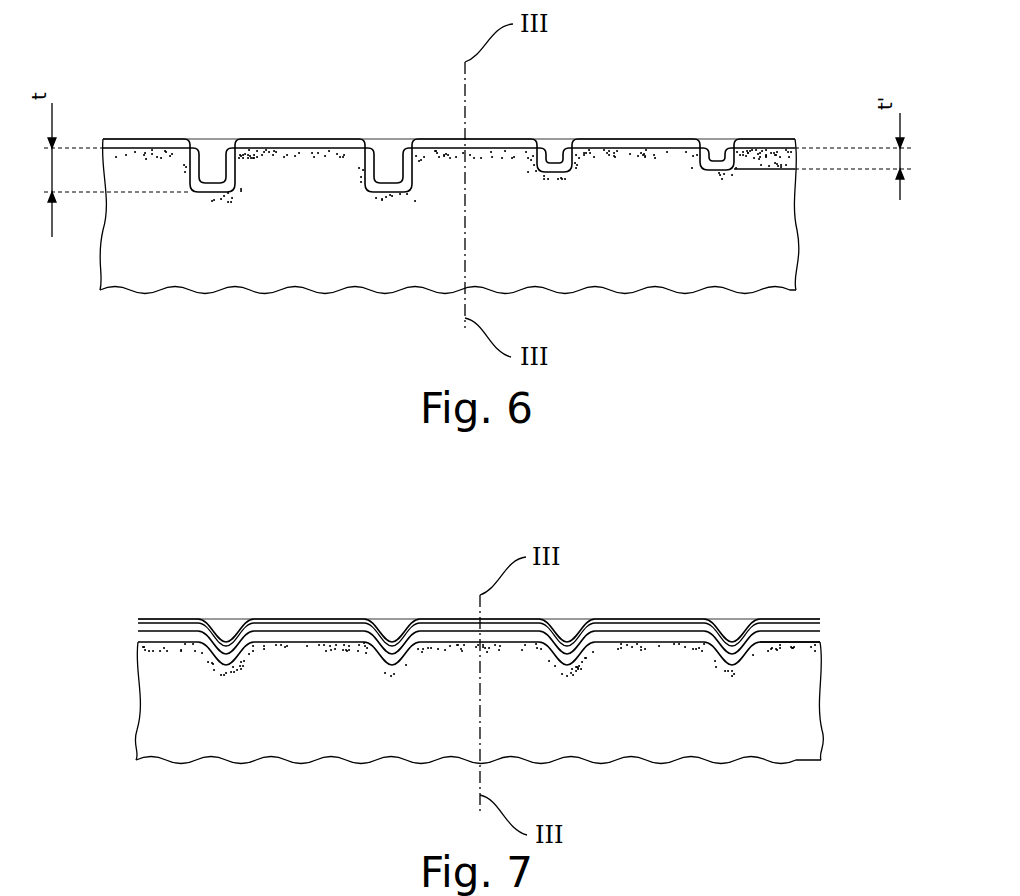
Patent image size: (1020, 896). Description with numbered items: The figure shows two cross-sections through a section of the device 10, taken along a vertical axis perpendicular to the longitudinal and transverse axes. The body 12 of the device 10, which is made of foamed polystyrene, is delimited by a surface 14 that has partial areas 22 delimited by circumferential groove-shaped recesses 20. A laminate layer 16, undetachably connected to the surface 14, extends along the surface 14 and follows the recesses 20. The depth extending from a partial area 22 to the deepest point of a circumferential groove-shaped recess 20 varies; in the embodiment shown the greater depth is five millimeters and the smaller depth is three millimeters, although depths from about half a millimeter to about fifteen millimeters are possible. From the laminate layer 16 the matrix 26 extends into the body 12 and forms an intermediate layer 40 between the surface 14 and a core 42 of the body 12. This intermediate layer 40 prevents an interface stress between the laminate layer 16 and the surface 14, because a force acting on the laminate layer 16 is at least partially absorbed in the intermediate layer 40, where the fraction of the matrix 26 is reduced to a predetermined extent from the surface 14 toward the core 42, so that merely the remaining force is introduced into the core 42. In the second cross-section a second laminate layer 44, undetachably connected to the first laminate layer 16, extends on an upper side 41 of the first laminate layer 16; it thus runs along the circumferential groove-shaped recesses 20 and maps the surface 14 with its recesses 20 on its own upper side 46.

In FIG. 6, the device 10 is at (232, 298).
In FIG. 7, the device 10 is at (232, 776).
In FIG. 6, the body 12 is at (703, 296).
In FIG. 7, the body 12 is at (727, 776).
In FIG. 6, the surface 14 is at (272, 146).
In FIG. 7, the surface 14 is at (275, 641).
In FIG. 6, the laminate layer 16 is at (632, 146).
In FIG. 7, the laminate layer 16 is at (797, 650).
In FIG. 6, the circumferential groove-shaped recess 20 is at (233, 178).
In FIG. 7, the circumferential groove-shaped recess 20 is at (242, 657).
In FIG. 6, the partial area 22 is at (310, 144).
In FIG. 7, the partial area 22 is at (307, 641).
In FIG. 6, the matrix 26 is at (678, 157).
In FIG. 7, the matrix 26 is at (658, 650).
In FIG. 6, the intermediate layer 40 is at (522, 155).
In FIG. 7, the intermediate layer 40 is at (527, 650).
In FIG. 7, the upper side 41 is at (686, 628).
In FIG. 6, the core 42 is at (449, 214).
In FIG. 7, the core 42 is at (479, 701).
In FIG. 7, the second laminate layer 44 is at (634, 631).
In FIG. 7, the upper side 46 is at (466, 618).